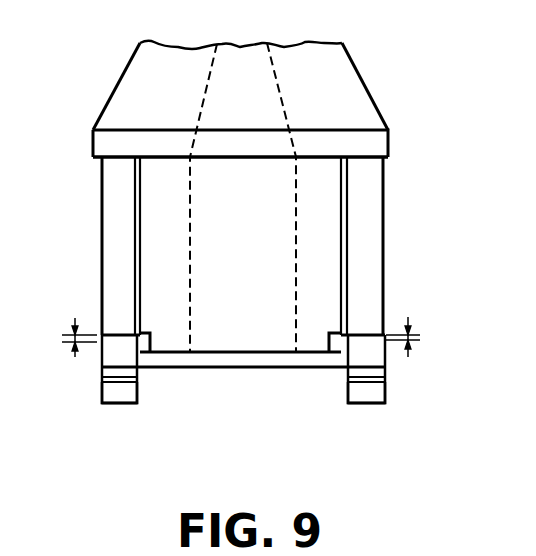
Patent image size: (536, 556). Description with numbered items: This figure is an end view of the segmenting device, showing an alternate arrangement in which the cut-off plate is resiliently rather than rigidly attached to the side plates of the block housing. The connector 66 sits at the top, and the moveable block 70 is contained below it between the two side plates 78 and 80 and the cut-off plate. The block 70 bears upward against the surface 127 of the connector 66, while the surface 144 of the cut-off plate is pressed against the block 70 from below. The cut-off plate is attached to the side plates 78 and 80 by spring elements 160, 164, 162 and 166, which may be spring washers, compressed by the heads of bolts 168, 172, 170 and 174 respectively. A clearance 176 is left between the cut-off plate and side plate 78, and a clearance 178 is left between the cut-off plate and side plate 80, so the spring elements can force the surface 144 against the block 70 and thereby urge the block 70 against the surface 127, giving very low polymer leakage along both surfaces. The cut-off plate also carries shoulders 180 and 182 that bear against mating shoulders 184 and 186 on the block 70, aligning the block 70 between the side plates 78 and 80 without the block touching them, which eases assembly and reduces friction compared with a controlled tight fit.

The connector 66 is at (353, 56).
The surface 127 is at (322, 157).
The moveable block 70 is at (155, 217).
The side plate 78 is at (102, 243).
The side plate 80 is at (385, 187).
The mating shoulder 184 is at (152, 350).
The mating shoulder 186 is at (328, 348).
The surface 144 is at (268, 353).
The shoulder 180 is at (142, 360).
The shoulder 182 is at (335, 354).
The spring element 160 is at (102, 377).
The spring element 164 is at (84, 402).
The bolt 168 is at (137, 403).
The bolt 172 is at (143, 435).
The spring element 162 is at (385, 377).
The spring element 166 is at (403, 402).
The bolt 170 is at (356, 403).
The bolt 174 is at (340, 437).
The clearance 176 is at (72, 338).
The clearance 178 is at (412, 336).